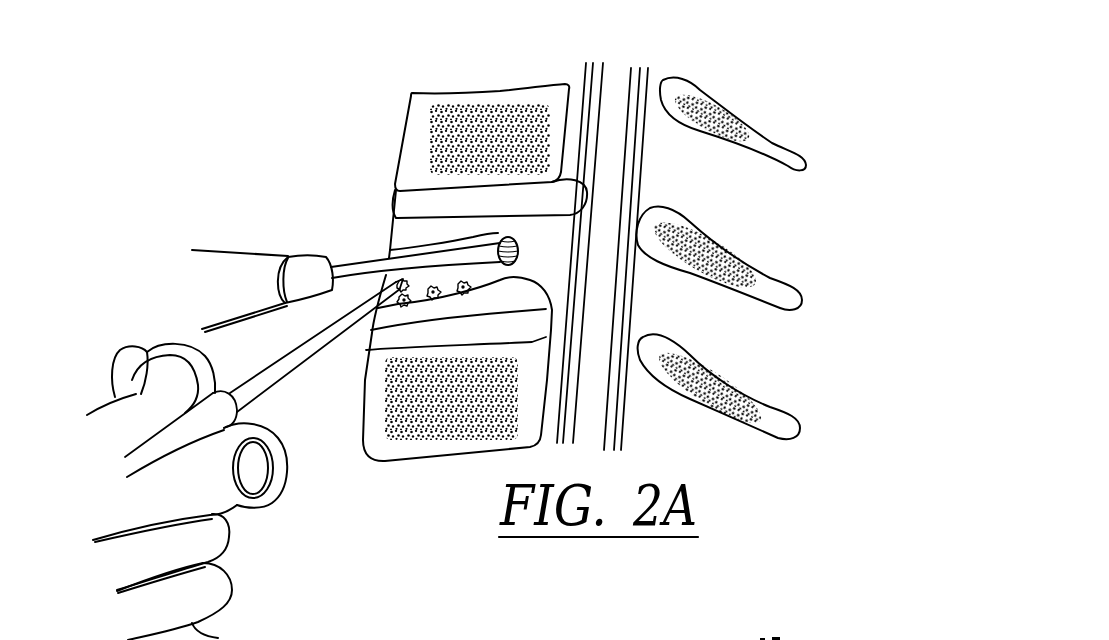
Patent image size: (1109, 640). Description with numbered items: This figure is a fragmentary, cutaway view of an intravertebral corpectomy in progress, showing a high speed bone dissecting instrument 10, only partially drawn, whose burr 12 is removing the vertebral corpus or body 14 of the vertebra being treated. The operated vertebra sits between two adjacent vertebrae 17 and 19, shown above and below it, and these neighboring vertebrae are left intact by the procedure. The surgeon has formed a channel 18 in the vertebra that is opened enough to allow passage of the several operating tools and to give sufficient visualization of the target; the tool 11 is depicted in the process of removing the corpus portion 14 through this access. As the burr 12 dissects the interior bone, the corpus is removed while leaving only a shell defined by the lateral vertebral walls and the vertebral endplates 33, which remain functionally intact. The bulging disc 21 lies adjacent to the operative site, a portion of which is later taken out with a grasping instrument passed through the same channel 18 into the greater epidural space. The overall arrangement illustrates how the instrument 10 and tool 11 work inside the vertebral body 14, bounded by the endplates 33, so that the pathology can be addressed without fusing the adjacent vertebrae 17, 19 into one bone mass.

The high speed bone dissecting instrument 10 is at (285, 256).
The tool 11 is at (291, 365).
The burr 12 is at (518, 252).
The vertebral corpus 14 is at (519, 256).
The adjacent vertebra 17 is at (457, 462).
The channel 18 is at (495, 232).
The adjacent vertebra 19 is at (566, 110).
The bulging disc 21 is at (570, 188).
The vertebral endplates 33 is at (391, 238).